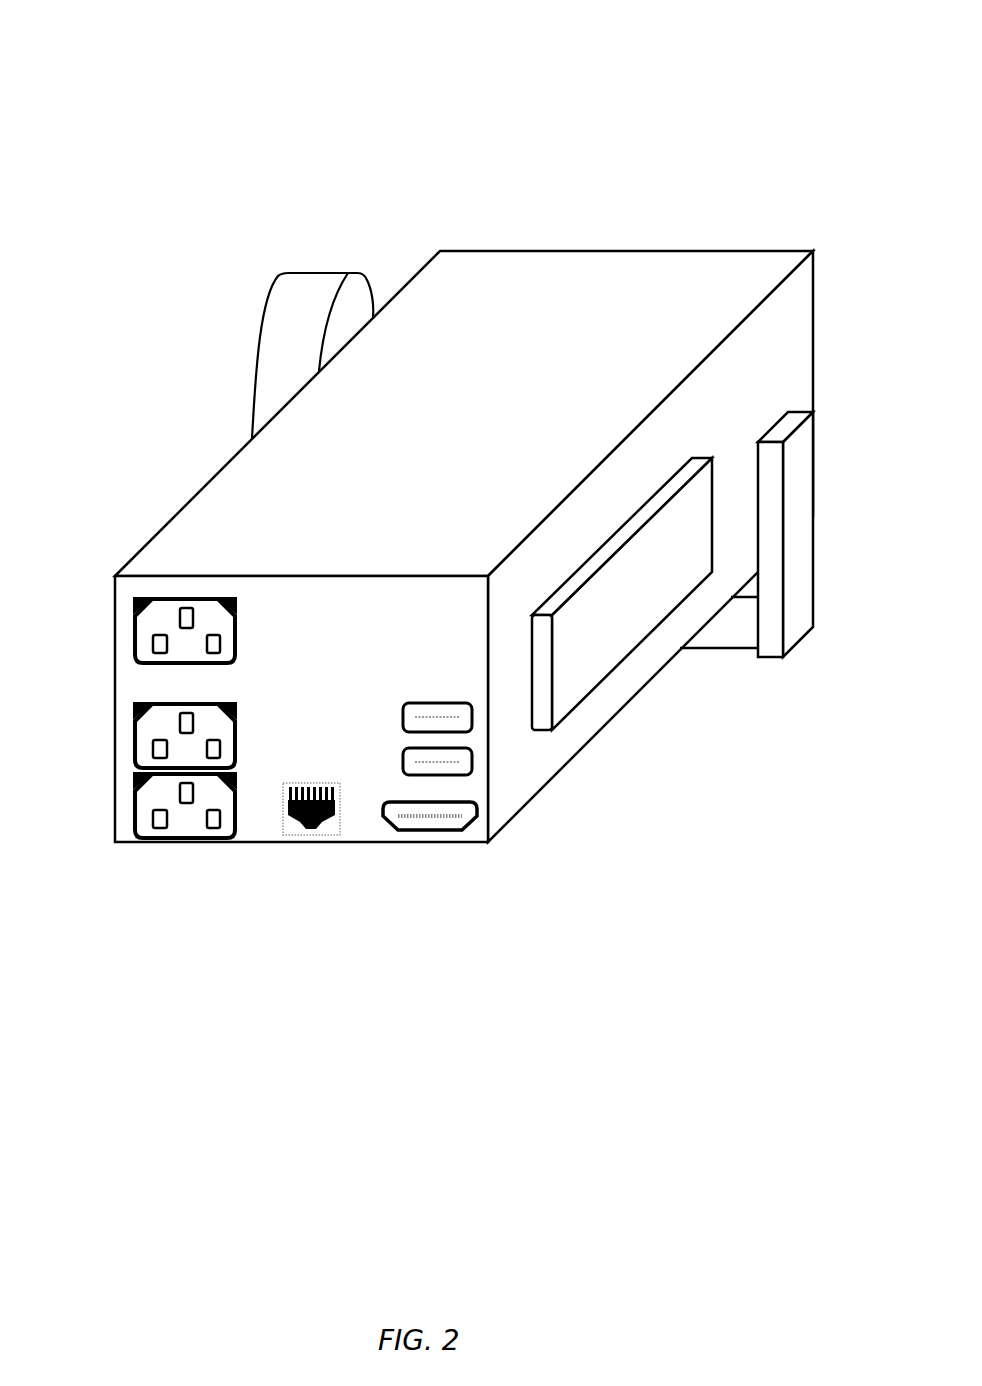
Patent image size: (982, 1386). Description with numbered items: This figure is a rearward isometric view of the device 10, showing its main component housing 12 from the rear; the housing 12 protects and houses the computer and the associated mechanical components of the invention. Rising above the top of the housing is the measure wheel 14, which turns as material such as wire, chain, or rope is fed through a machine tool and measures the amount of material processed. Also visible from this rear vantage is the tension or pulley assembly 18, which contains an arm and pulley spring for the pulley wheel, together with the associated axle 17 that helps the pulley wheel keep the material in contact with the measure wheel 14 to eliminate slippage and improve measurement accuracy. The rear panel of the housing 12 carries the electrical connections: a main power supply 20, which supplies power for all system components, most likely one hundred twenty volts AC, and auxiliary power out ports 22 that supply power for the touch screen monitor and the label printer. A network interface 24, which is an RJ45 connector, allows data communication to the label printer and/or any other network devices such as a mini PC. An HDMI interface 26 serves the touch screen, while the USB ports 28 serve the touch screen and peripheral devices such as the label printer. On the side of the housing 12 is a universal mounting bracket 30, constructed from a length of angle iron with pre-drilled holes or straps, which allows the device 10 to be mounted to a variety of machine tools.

The device 10 is at (463, 462).
The main component housing 12 is at (643, 273).
The measure wheel 14 is at (303, 292).
The axle 17 is at (722, 630).
The tension or pulley assembly 18 is at (797, 510).
The main power supply 20 is at (150, 647).
The auxiliary power out ports 22 is at (150, 770).
The network interface 24 is at (312, 833).
The HDMI interface 26 is at (433, 822).
The USB ports 28 is at (470, 732).
The universal mounting bracket 30 is at (583, 672).